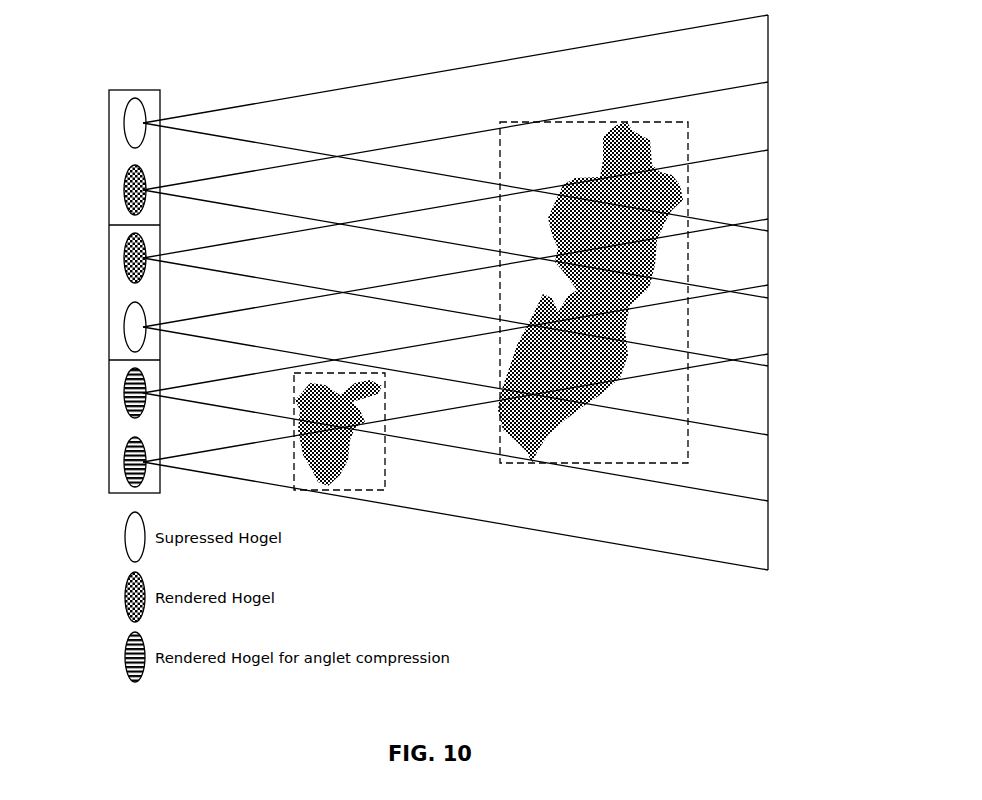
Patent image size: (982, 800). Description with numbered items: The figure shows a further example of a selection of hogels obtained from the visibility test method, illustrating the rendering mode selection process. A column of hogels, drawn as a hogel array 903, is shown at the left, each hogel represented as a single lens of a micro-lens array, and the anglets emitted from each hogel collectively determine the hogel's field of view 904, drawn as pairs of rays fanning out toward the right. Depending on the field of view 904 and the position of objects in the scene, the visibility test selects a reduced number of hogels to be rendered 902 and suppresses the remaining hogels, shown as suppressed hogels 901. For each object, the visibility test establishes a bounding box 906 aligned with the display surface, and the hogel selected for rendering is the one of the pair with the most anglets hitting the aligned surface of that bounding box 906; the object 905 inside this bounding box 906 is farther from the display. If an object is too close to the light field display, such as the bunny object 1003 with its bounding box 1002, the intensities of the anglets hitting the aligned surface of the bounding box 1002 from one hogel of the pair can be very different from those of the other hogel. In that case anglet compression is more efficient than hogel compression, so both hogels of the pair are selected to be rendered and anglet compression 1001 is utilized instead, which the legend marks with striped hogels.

The suppressed hogel 901 is at (124, 125).
The rendered hogel 902 is at (124, 192).
The hogel array 903 is at (158, 89).
The field of view 904 is at (184, 113).
The object in scene 905 is at (630, 126).
The bounding box 906 is at (515, 120).
The anglet compression 1001 is at (124, 395).
The bounding box 1002 is at (310, 371).
The bunny object 1003 is at (358, 373).